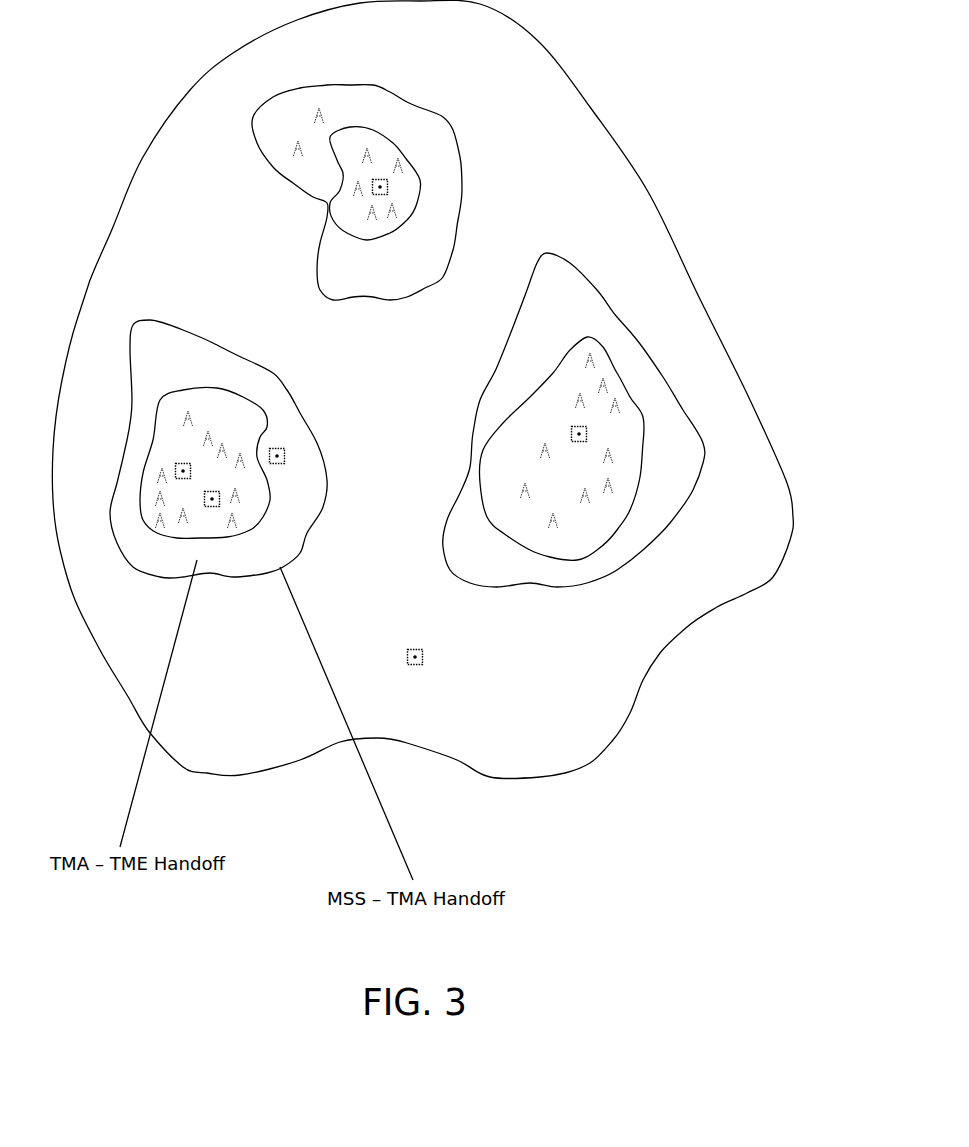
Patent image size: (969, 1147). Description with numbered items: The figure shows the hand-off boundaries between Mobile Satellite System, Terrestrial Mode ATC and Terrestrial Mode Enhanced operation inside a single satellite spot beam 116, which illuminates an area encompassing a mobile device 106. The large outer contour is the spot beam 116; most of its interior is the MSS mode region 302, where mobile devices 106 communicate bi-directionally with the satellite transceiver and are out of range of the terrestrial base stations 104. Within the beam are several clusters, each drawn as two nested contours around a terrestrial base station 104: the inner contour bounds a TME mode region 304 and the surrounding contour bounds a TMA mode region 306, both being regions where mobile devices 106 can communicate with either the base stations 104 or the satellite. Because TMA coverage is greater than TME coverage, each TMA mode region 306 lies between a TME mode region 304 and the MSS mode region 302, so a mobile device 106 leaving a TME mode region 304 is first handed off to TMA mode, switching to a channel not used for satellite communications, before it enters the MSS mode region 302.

The spot beam 116 is at (705, 612).
The TMA mode region 306 is at (427, 213).
The TME mode region 304 is at (388, 160).
The terrestrial base station 104 is at (380, 200).
The mobile device 106 is at (285, 448).
The MSS mode region 302 is at (258, 680).